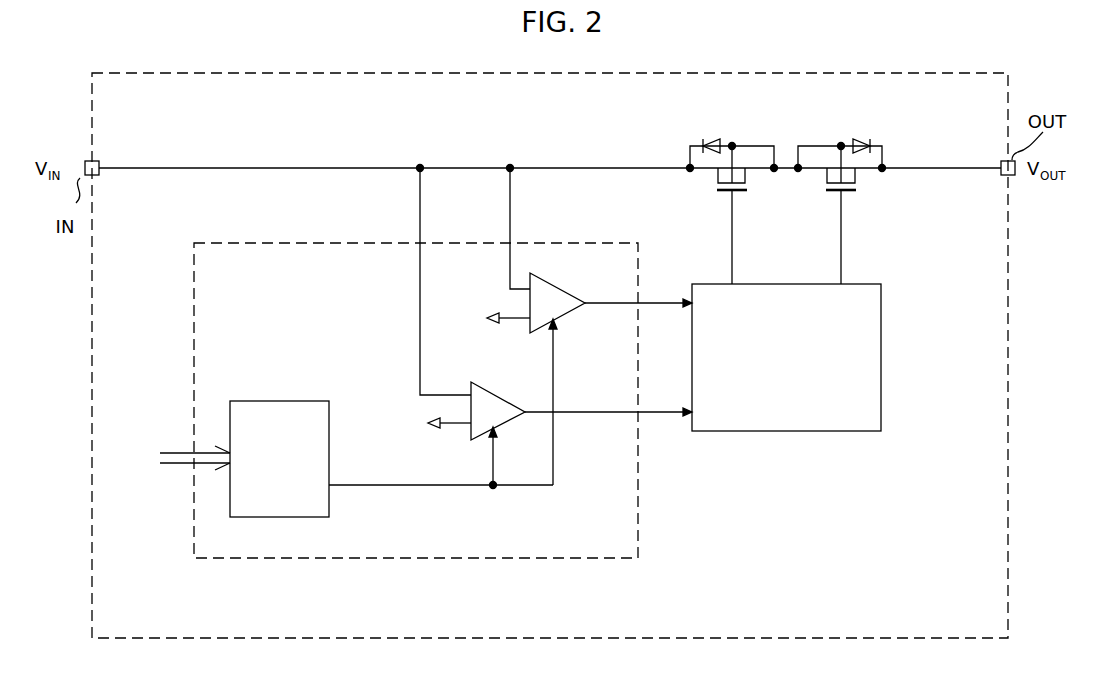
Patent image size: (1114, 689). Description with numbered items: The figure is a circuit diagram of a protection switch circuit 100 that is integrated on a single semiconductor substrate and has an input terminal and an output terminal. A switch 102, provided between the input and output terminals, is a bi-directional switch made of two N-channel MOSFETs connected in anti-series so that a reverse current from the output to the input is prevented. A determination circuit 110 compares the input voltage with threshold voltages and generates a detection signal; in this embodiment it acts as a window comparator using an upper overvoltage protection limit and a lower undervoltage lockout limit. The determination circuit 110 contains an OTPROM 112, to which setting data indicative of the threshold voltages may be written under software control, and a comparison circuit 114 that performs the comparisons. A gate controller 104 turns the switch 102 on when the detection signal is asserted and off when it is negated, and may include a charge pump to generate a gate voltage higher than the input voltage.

The protection switch circuit 100 is at (548, 640).
The switch 102 is at (682, 130).
The gate controller 104 is at (881, 347).
The determination circuit 110 is at (425, 560).
The OTPROM 112 is at (285, 400).
The comparison circuit 114 is at (376, 503).